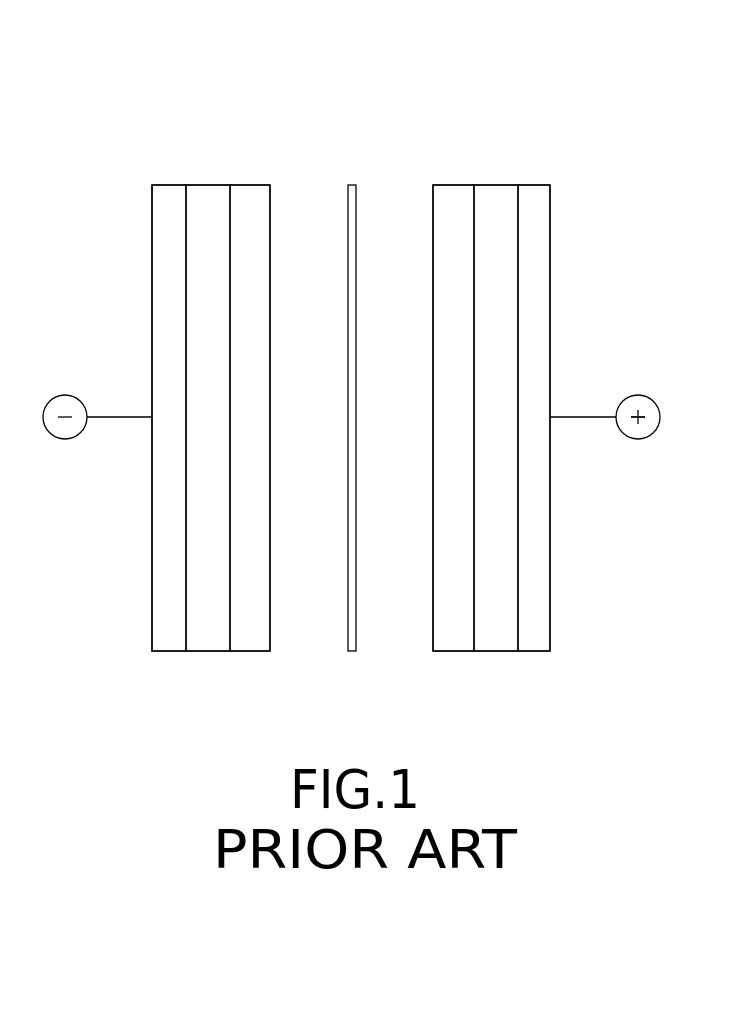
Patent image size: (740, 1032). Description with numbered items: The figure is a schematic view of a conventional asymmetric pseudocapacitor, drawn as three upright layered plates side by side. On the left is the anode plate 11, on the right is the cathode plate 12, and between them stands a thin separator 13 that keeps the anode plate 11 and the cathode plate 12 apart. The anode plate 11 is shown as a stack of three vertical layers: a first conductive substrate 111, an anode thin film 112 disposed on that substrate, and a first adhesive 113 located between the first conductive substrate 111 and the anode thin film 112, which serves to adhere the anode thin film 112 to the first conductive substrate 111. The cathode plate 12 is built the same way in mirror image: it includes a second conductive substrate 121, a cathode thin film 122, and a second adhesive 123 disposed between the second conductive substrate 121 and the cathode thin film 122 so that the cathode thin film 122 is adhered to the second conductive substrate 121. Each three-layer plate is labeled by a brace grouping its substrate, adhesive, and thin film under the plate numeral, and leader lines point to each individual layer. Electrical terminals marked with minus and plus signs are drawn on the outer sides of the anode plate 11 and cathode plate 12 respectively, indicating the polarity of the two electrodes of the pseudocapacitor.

The anode plate 11 is at (280, 65).
The first conductive substrate 111 is at (170, 193).
The first adhesive 113 is at (209, 193).
The anode thin film 112 is at (254, 193).
The separator 13 is at (351, 185).
The cathode plate 12 is at (563, 78).
The cathode thin film 122 is at (458, 195).
The second adhesive 123 is at (498, 195).
The second conductive substrate 121 is at (543, 195).